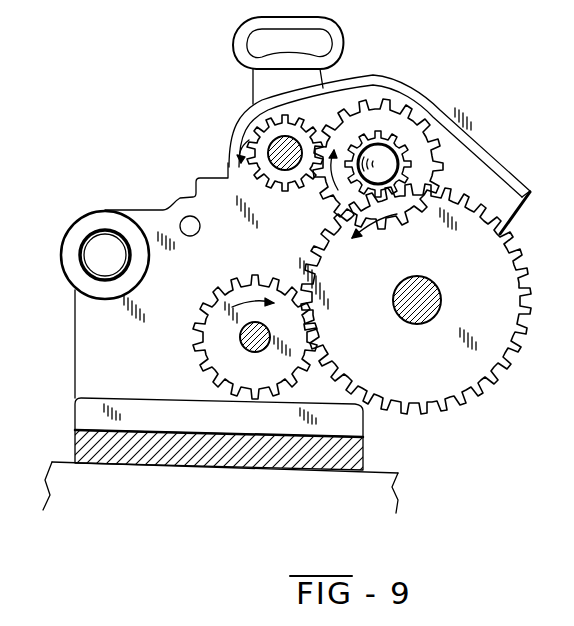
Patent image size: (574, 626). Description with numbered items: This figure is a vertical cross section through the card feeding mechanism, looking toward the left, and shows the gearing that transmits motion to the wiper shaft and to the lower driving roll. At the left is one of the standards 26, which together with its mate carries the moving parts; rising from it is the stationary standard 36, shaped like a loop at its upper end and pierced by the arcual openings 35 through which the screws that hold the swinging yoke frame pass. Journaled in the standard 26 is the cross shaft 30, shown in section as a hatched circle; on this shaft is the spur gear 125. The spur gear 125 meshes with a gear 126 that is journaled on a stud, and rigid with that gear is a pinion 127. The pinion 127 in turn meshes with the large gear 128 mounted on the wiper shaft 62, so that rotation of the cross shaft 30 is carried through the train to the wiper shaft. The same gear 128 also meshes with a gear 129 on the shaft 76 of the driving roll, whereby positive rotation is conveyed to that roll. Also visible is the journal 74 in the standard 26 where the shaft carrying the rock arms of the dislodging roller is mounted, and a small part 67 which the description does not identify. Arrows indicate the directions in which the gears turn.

The arcual openings 35 is at (288, 43).
The stationary standard 36 is at (288, 86).
The spur gear 125 is at (338, 98).
The cross shaft 30 is at (287, 170).
The gear 126 is at (378, 164).
The pinion 127 is at (399, 160).
The gear 128 is at (416, 299).
The wiper shaft 62 is at (420, 323).
The shaft 76 is at (242, 342).
The gear 129 is at (265, 325).
The journal 74 is at (105, 255).
The pin 67 is at (190, 236).
The standard 26 is at (220, 444).